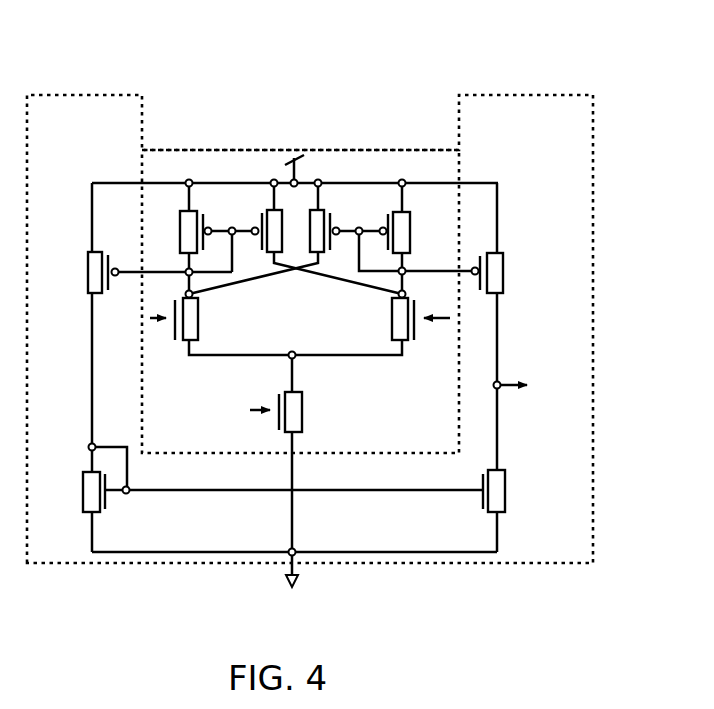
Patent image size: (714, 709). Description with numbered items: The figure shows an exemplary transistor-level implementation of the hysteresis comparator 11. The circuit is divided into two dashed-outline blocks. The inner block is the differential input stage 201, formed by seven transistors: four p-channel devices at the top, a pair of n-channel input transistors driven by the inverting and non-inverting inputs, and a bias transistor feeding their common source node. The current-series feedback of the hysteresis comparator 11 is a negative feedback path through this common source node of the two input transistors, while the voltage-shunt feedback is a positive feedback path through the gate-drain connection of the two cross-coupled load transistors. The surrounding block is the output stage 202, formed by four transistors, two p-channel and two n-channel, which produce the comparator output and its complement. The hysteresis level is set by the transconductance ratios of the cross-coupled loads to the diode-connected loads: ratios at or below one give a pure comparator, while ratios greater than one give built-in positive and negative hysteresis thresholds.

The hysteresis comparator 11 is at (586, 28).
The differential input stage 201 is at (240, 150).
The output stage 202 is at (593, 193).